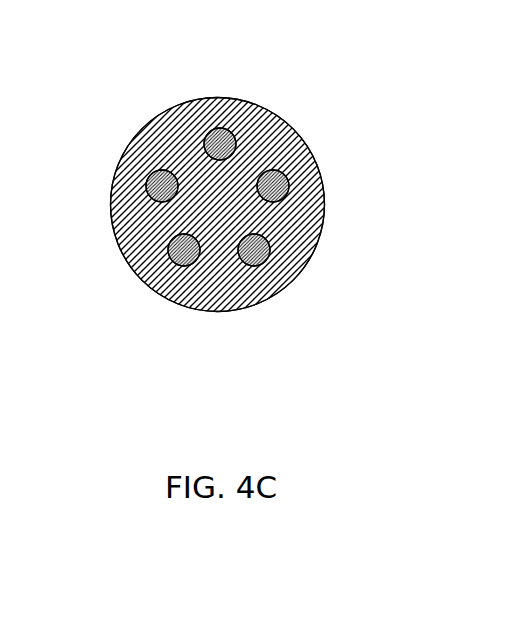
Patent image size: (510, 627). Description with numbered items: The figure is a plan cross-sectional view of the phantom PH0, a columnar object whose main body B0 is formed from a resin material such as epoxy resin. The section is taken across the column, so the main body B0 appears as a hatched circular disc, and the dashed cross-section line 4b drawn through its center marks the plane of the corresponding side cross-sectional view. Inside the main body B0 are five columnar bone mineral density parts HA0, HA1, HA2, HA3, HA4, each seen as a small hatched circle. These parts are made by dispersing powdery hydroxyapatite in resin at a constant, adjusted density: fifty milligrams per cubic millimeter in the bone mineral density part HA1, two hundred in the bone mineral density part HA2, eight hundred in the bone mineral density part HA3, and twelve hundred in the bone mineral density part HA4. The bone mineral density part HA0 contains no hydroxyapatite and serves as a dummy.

The phantom PH0 is at (156, 98).
The main body B0 is at (288, 148).
The cross-section 4b is at (218, 352).
The bone mineral density part HA0 is at (147, 188).
The bone mineral density part HA1 is at (173, 262).
The bone mineral density part HA2 is at (262, 265).
The bone mineral density part HA3 is at (289, 187).
The bone mineral density part HA4 is at (228, 128).